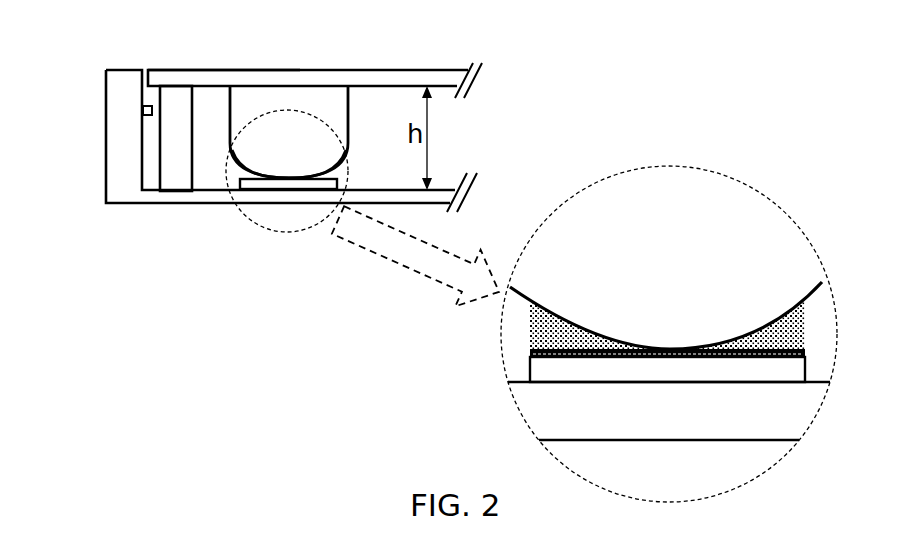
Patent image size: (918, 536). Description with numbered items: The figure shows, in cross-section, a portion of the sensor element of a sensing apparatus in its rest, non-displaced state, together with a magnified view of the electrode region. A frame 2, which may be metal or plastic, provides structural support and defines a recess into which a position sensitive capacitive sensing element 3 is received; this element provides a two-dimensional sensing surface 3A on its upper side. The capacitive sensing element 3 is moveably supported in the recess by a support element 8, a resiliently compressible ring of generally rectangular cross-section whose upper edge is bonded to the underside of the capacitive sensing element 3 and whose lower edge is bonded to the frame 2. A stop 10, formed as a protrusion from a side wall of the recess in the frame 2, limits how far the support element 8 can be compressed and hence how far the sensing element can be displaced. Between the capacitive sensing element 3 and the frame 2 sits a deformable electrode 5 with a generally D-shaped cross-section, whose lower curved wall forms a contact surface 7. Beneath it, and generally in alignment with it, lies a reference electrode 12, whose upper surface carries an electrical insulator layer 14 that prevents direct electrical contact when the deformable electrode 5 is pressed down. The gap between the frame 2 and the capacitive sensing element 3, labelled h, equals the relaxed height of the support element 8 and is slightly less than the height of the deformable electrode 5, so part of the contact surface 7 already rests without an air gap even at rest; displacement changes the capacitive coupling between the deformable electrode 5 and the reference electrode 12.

The frame 2 is at (117, 147).
The capacitive sensing element 3 is at (350, 78).
The sensing surface 3A is at (187, 70).
The deformable electrode 5 is at (251, 115).
The contact surface 7 is at (322, 168).
The support element 8 is at (183, 120).
The stop 10 is at (144, 110).
The reference electrode 12 is at (238, 183).
The electrical insulator layer 14 is at (803, 355).